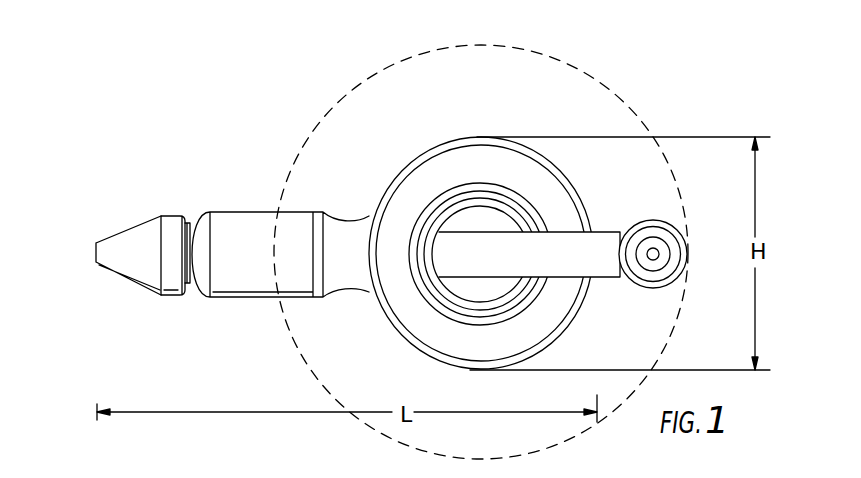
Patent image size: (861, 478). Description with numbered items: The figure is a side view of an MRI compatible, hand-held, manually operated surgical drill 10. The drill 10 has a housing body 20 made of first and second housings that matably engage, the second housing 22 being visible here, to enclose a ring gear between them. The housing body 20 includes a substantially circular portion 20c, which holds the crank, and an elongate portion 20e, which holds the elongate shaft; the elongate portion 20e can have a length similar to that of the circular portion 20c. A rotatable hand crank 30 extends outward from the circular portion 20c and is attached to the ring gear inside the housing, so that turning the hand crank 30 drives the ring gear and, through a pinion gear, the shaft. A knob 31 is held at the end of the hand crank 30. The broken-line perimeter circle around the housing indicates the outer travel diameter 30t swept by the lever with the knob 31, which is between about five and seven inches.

The drill 10 is at (402, 210).
The housing body 20 is at (406, 246).
The substantially circular portion 20c is at (548, 318).
The elongate portion 20e is at (292, 277).
The second housing 22 is at (453, 339).
The hand crank 30 is at (608, 250).
The outer travel diameter 30t is at (625, 100).
The knob 31 is at (670, 238).